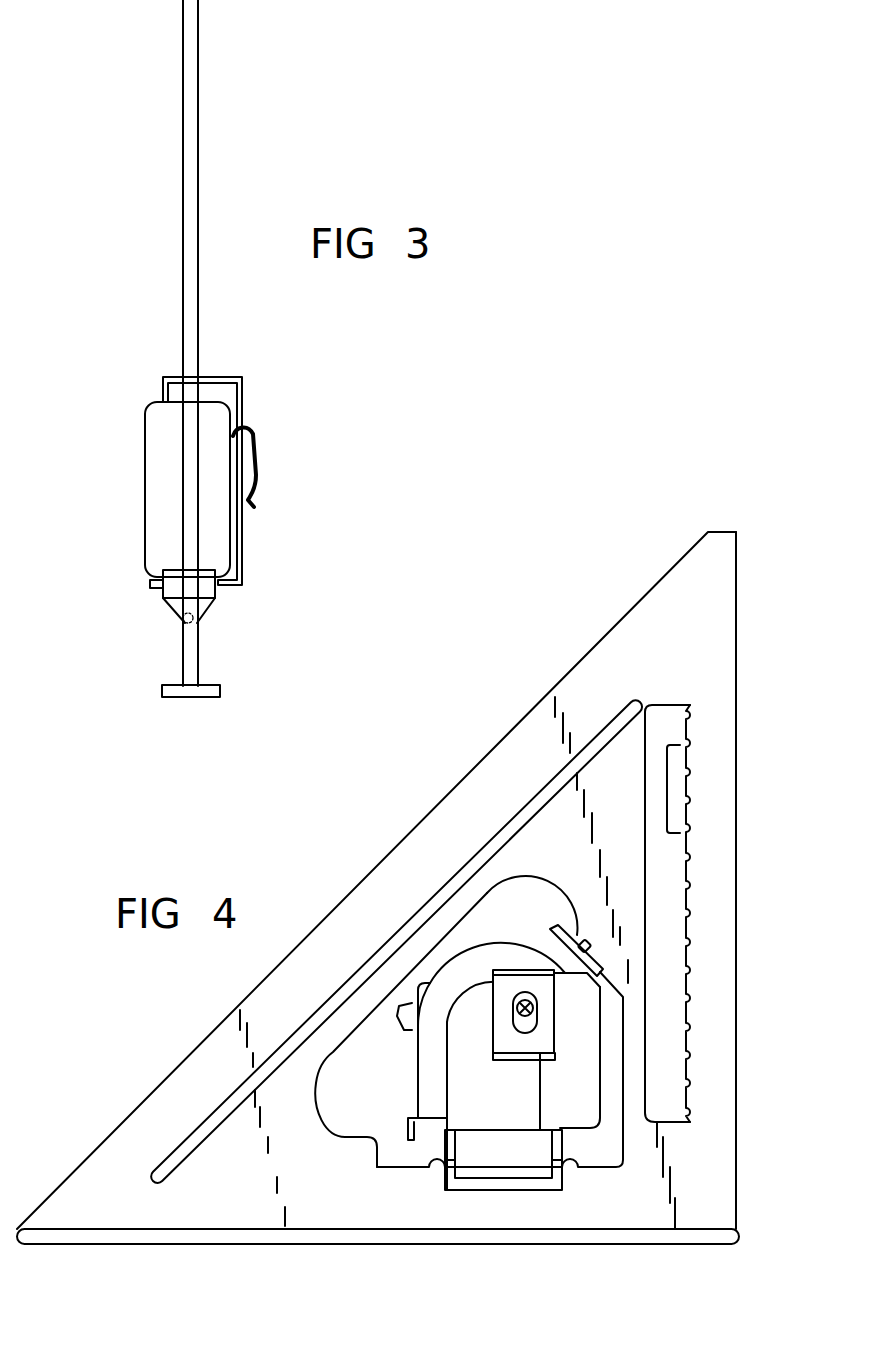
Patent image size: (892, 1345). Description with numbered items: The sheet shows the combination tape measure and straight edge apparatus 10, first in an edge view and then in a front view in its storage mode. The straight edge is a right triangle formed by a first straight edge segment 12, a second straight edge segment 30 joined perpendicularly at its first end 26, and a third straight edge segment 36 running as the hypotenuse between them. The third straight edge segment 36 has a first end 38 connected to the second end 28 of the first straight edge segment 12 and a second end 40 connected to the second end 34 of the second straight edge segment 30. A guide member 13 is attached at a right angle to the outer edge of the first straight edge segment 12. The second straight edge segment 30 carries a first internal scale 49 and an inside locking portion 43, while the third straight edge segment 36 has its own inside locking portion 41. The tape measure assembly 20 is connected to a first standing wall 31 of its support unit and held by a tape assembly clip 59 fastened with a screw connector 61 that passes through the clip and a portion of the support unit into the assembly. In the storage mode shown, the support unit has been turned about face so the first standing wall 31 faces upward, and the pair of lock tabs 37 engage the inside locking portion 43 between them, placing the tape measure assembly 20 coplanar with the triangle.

In FIG. 3, the combination tape measure and straight edge apparatus 10 is at (280, 160).
In FIG. 4, the combination tape measure and straight edge apparatus 10 is at (648, 507).
In FIG. 3, the first straight edge segment 12 is at (195, 652).
In FIG. 4, the first straight edge segment 12 is at (463, 1215).
In FIG. 3, the guide member 13 is at (220, 690).
In FIG. 4, the guide member 13 is at (358, 1237).
In FIG. 3, the tape measure assembly 20 is at (162, 447).
In FIG. 4, the tape measure assembly 20 is at (445, 985).
In FIG. 4, the first end 26 is at (708, 1202).
In FIG. 4, the second end 28 is at (125, 1185).
In FIG. 3, the second straight edge segment 30 is at (192, 340).
In FIG. 4, the second straight edge segment 30 is at (695, 925).
In FIG. 3, the first standing wall 31 is at (242, 400).
In FIG. 4, the first standing wall 31 is at (570, 1087).
In FIG. 4, the second end 34 is at (722, 603).
In FIG. 4, the third straight edge segment 36 is at (445, 837).
In FIG. 4, the lock tabs 37 is at (590, 950).
In FIG. 4, the first end 38 is at (205, 1087).
In FIG. 4, the second end 40 is at (642, 625).
In FIG. 4, the inside locking portion 41 is at (480, 882).
In FIG. 4, the inside locking portion 43 is at (690, 878).
In FIG. 4, the first internal scale 49 is at (667, 800).
In FIG. 3, the tape assembly clip 59 is at (257, 450).
In FIG. 4, the tape assembly clip 59 is at (547, 1035).
In FIG. 4, the screw connector 61 is at (532, 905).